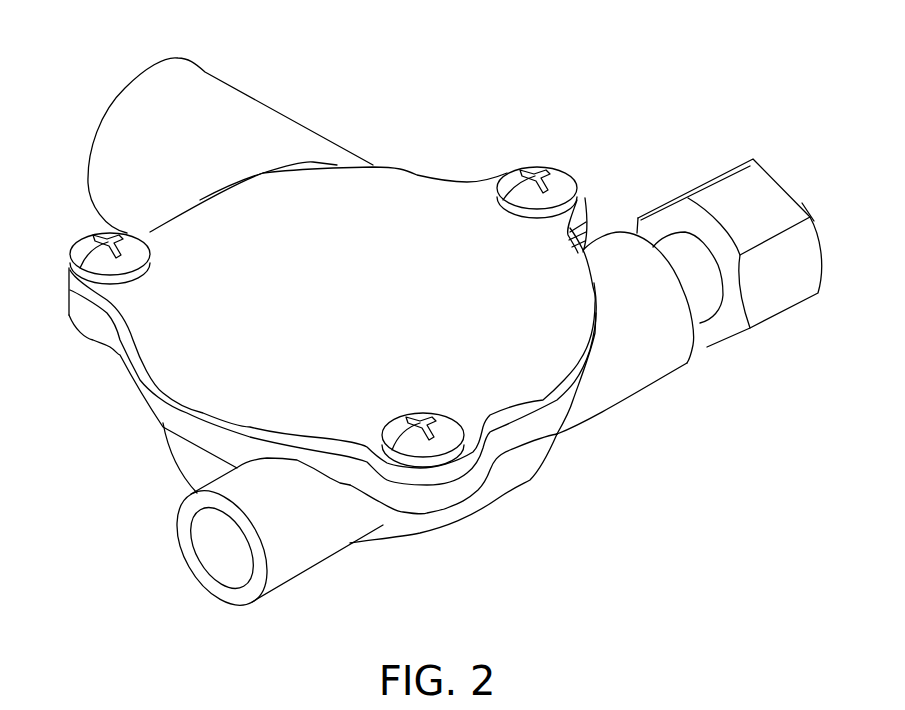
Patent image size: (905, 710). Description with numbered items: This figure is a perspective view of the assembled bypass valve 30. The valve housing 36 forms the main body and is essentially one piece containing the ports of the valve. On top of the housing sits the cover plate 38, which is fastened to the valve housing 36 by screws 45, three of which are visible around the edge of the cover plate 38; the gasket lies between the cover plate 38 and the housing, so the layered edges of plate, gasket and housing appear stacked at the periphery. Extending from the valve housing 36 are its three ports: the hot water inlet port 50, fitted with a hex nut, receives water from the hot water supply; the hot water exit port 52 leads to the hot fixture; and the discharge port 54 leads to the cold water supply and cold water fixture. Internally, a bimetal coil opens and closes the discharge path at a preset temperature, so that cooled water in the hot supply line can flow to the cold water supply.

The valve 30 is at (426, 319).
The valve housing 36 is at (569, 449).
The cover plate 38 is at (187, 370).
The screws 45 is at (85, 248).
The hot water inlet port 50 is at (717, 159).
The hot water exit port 52 is at (288, 545).
The discharge port 54 is at (257, 92).